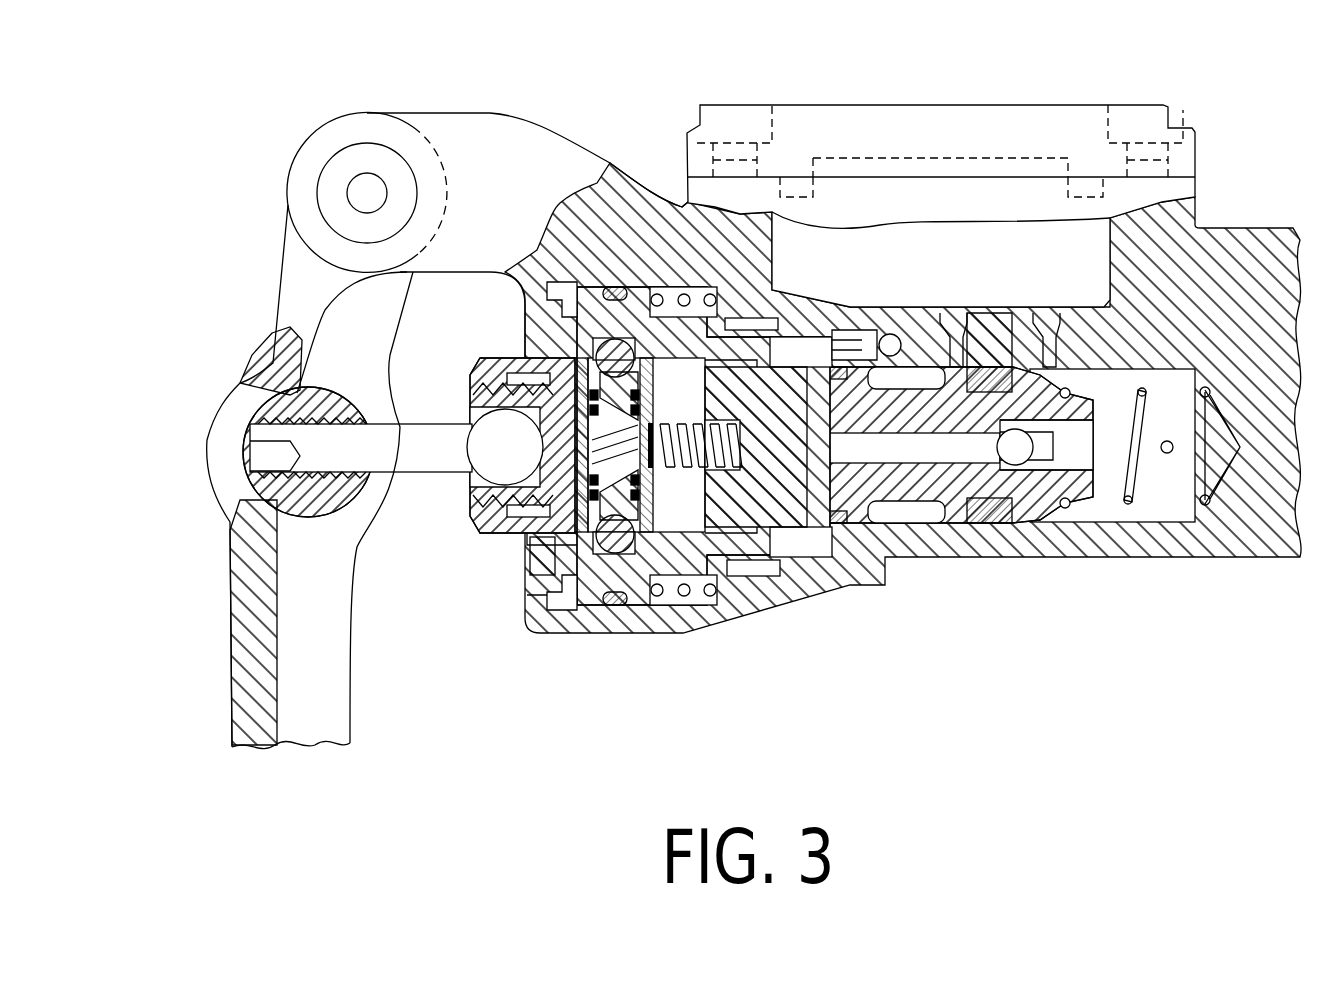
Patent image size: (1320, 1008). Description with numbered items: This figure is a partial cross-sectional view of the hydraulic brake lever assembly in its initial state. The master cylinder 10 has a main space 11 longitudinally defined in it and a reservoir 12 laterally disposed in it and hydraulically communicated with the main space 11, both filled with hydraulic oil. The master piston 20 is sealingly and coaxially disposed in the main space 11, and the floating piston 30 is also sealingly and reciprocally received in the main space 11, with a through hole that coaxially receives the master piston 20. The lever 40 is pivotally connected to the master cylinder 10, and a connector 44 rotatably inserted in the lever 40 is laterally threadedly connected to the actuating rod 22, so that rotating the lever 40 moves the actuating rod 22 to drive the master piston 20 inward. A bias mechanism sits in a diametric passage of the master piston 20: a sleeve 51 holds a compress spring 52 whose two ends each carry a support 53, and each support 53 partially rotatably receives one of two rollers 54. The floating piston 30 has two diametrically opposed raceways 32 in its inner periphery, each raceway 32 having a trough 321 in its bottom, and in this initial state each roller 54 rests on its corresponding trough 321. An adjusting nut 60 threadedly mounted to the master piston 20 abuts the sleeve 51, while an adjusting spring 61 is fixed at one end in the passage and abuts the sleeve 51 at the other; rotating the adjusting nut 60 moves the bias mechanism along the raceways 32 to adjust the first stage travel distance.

The master cylinder 10 is at (1227, 283).
The main space 11 is at (1140, 512).
The reservoir 12 is at (942, 247).
The master piston 20 is at (915, 490).
The actuating rod 22 is at (413, 450).
The floating piston 30 is at (545, 603).
The raceways 32 is at (715, 545).
The trough 321 is at (660, 575).
The lever 40 is at (240, 636).
The connector 44 is at (284, 392).
The sleeve 51 is at (722, 330).
The compress spring 52 is at (607, 565).
The support 53 is at (530, 318).
The rollers 54 is at (624, 340).
The adjusting nut 60 is at (482, 522).
The adjusting spring 61 is at (752, 530).